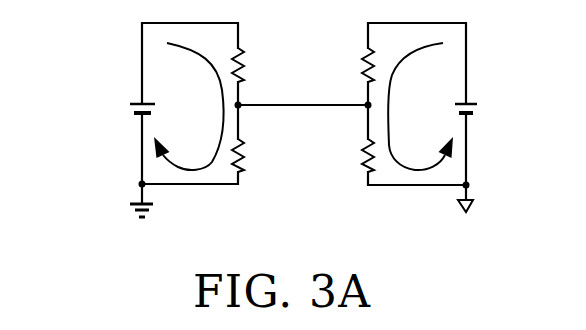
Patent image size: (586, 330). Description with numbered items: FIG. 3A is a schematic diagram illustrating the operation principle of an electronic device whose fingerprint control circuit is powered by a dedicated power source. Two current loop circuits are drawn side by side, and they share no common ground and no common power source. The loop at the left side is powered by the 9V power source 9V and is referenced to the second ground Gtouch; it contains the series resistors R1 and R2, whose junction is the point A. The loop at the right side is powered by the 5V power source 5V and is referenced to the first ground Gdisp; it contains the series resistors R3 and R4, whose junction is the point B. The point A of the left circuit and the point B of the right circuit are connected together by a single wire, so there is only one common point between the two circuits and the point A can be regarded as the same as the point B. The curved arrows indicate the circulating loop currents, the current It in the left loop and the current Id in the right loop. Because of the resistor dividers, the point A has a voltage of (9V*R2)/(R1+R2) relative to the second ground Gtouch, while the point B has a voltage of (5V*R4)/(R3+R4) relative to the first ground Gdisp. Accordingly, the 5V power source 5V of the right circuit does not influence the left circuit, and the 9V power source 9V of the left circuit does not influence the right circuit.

The resistor R1 is at (252, 66).
The resistor R2 is at (255, 159).
The resistor R3 is at (349, 65).
The resistor R4 is at (349, 158).
The point A is at (249, 122).
The point B is at (358, 119).
The 9V power source 9V is at (122, 107).
The 5V power source 5V is at (482, 106).
The second ground Gtouch is at (92, 212).
The first ground Gdisp is at (472, 224).
The touch loop current It is at (189, 106).
The display loop current Id is at (420, 106).